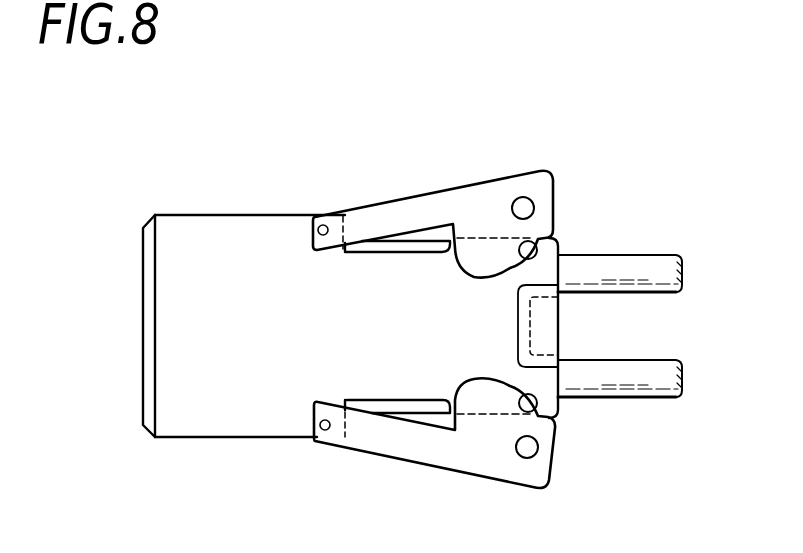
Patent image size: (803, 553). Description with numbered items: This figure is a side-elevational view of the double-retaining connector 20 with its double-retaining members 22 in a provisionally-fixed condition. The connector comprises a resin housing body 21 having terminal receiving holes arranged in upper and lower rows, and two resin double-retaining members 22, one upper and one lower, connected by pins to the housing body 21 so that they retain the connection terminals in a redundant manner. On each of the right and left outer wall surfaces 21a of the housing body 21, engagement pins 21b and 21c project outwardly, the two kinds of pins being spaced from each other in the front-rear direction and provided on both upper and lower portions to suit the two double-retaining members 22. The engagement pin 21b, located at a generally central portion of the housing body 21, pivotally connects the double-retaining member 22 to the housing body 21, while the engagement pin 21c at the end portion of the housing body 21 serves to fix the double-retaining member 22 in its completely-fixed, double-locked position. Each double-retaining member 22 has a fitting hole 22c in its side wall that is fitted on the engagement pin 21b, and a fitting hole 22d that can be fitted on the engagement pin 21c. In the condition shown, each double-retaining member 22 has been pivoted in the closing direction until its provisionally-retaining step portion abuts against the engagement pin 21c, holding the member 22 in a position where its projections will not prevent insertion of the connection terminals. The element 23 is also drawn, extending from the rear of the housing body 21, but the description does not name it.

The double-retaining connector 20 is at (167, 452).
The housing body 21 is at (245, 420).
The outer wall surface 21a is at (190, 352).
The engagement pin 21b is at (326, 216).
The engagement pin 21c is at (531, 250).
The double-retaining member 22 is at (485, 200).
The fitting hole 22c is at (322, 244).
The fitting hole 22d is at (526, 206).
The terminal 23 is at (657, 273).